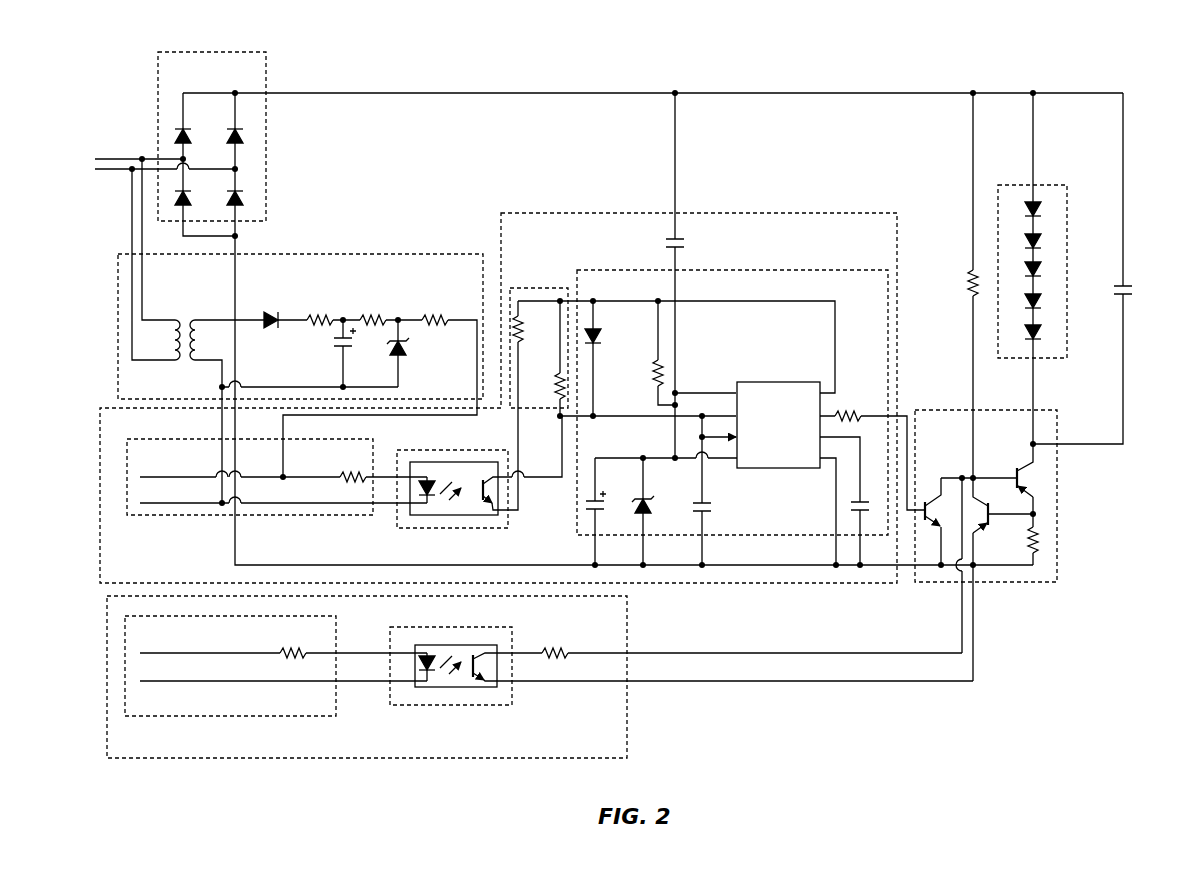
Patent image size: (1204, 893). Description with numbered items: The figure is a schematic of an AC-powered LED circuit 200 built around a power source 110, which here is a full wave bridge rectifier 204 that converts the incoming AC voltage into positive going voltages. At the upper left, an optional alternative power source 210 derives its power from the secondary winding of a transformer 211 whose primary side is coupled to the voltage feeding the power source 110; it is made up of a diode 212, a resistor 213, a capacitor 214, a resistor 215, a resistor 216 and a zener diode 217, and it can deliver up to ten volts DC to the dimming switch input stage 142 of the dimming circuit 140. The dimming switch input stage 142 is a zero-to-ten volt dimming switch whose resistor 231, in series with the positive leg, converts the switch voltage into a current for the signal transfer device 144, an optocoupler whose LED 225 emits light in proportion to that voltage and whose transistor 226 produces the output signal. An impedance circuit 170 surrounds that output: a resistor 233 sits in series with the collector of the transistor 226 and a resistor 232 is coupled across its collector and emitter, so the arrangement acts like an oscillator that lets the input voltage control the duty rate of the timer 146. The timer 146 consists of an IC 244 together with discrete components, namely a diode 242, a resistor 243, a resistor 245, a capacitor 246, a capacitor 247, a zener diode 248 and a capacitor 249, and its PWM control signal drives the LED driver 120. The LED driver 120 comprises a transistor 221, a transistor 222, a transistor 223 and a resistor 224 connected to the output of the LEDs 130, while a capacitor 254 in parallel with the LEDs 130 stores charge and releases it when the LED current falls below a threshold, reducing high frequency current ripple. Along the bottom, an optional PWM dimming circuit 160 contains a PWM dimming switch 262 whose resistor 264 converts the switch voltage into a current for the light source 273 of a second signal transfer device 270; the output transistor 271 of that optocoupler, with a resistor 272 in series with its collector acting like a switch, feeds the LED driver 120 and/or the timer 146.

The power source 110 is at (168, 52).
The full wave bridge rectifier 204 is at (170, 115).
The alternative power source 210 is at (467, 253).
The transformer 211 is at (187, 323).
The diode 212 is at (270, 316).
The resistor 213 is at (318, 315).
The capacitor 214 is at (336, 344).
The resistor 215 is at (371, 315).
The resistor 216 is at (436, 315).
The zener diode 217 is at (410, 348).
The dimming switch input stage 142 is at (180, 440).
The resistor 231 is at (351, 474).
The signal transfer device 144 is at (405, 530).
The LED 225 is at (428, 476).
The transistor 226 is at (478, 504).
The dimming circuit 140 is at (878, 213).
The impedance circuit 170 is at (538, 288).
The timer 146 is at (822, 270).
The resistor 232 is at (519, 332).
The resistor 233 is at (566, 384).
The diode 242 is at (598, 332).
The resistor 243 is at (663, 376).
The IC 244 is at (781, 382).
The resistor 245 is at (851, 408).
The capacitor 246 is at (850, 506).
The capacitor 247 is at (588, 503).
The zener diode 248 is at (640, 503).
The capacitor 249 is at (711, 505).
The LED driver 120 is at (1044, 583).
The transistor 221 is at (931, 500).
The transistor 222 is at (980, 527).
The transistor 223 is at (1032, 480).
The resistor 224 is at (1036, 536).
The LEDs 130 is at (1055, 185).
The capacitor 254 is at (1132, 290).
The PWM dimming circuit 160 is at (627, 707).
The PWM dimming switch 262 is at (180, 716).
The resistor 264 is at (292, 648).
The signal transfer device 270 is at (503, 627).
The transistor 271 is at (482, 680).
The resistor 272 is at (551, 650).
The light source 273 is at (422, 668).
The AC-powered LED circuit 200 is at (1048, 683).